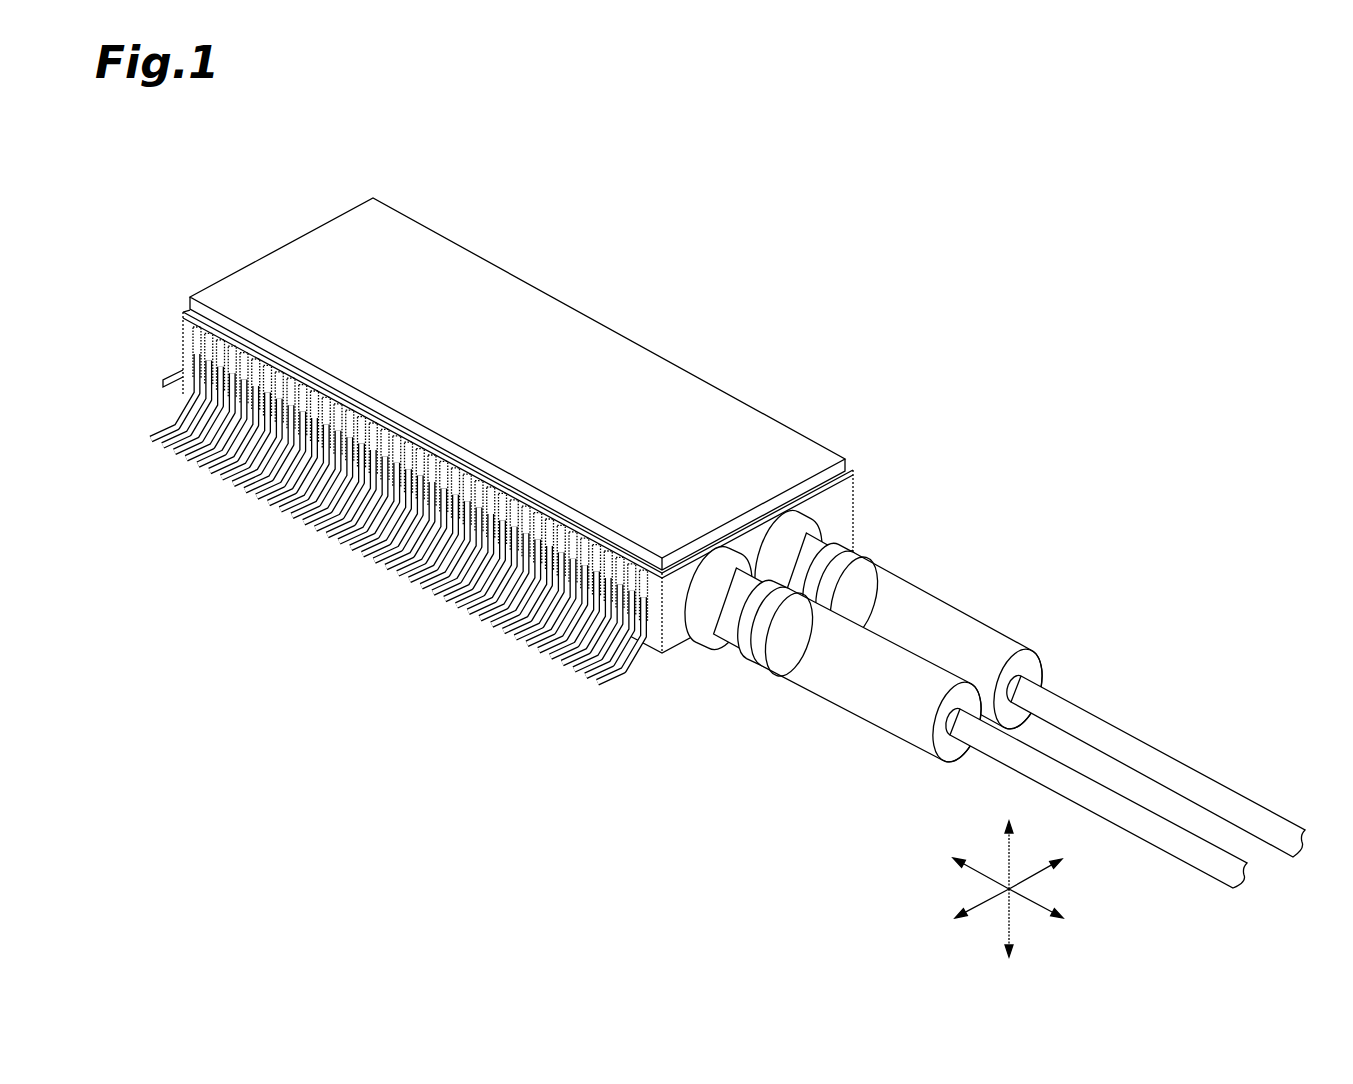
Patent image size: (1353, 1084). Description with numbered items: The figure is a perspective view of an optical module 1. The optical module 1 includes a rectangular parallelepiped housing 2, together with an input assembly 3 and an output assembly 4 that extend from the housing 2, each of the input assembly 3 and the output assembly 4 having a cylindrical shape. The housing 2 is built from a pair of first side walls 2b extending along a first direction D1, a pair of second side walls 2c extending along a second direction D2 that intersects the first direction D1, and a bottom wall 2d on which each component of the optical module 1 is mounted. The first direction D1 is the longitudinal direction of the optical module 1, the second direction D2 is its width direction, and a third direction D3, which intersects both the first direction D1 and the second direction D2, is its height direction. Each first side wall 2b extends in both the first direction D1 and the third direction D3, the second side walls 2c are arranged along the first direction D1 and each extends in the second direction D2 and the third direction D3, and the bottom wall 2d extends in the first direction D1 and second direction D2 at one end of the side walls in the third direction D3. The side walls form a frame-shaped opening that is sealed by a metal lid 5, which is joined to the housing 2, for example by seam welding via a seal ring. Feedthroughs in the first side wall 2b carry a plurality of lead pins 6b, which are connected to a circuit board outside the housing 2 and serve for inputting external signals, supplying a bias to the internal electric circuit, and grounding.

The optical module 1 is at (728, 533).
The housing 2 is at (530, 483).
The first side wall 2b is at (650, 648).
The second side wall 2c is at (676, 632).
The bottom wall 2d is at (690, 645).
The input assembly 3 is at (828, 703).
The output assembly 4 is at (968, 610).
The lid 5 is at (658, 388).
The lead pins 6b is at (392, 574).
The first direction D1 is at (1036, 897).
The second direction D2 is at (1030, 873).
The third direction D3 is at (1012, 920).